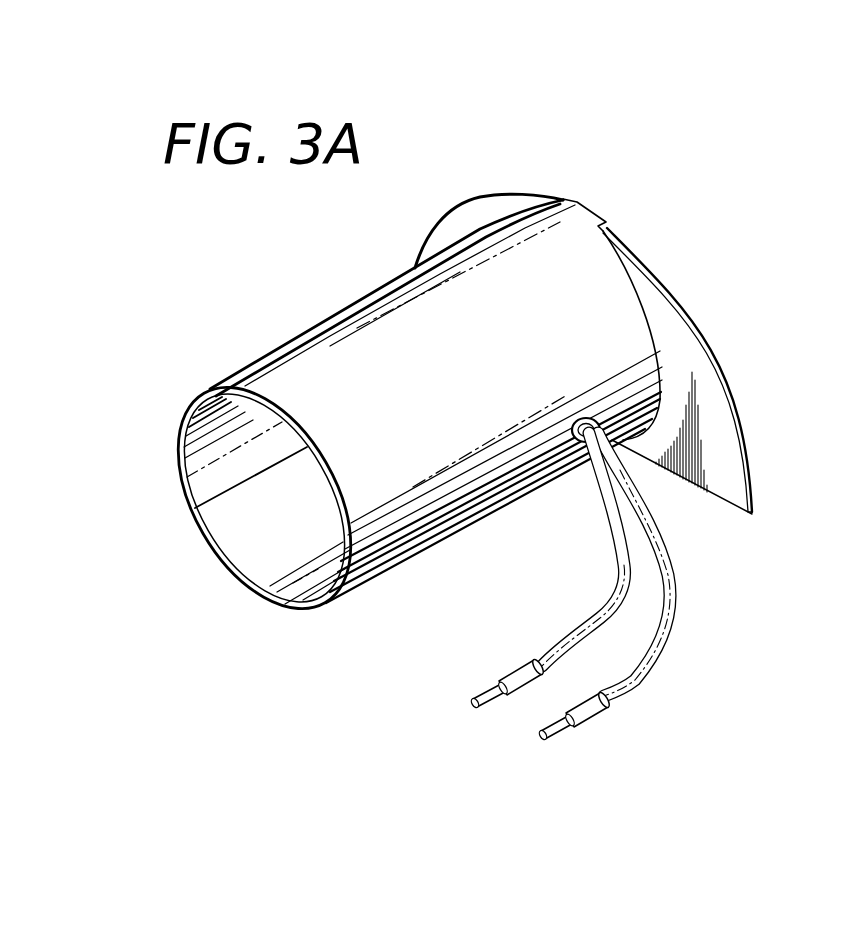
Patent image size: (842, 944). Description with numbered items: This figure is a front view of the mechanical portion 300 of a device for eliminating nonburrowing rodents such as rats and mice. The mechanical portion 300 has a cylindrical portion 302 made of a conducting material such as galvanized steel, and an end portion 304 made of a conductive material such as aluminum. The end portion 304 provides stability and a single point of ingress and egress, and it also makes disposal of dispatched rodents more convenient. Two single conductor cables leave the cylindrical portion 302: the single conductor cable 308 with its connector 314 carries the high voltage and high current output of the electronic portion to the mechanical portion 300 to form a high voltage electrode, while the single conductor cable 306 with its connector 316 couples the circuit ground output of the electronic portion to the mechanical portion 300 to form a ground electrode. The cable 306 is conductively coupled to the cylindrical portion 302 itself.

The mechanical portion 300 is at (655, 200).
The cylindrical portion 302 is at (322, 383).
The end portion 304 is at (733, 500).
The single conductor cable 306 is at (670, 625).
The single conductor cable 308 is at (595, 618).
The connector 314 is at (512, 677).
The connector 316 is at (585, 712).